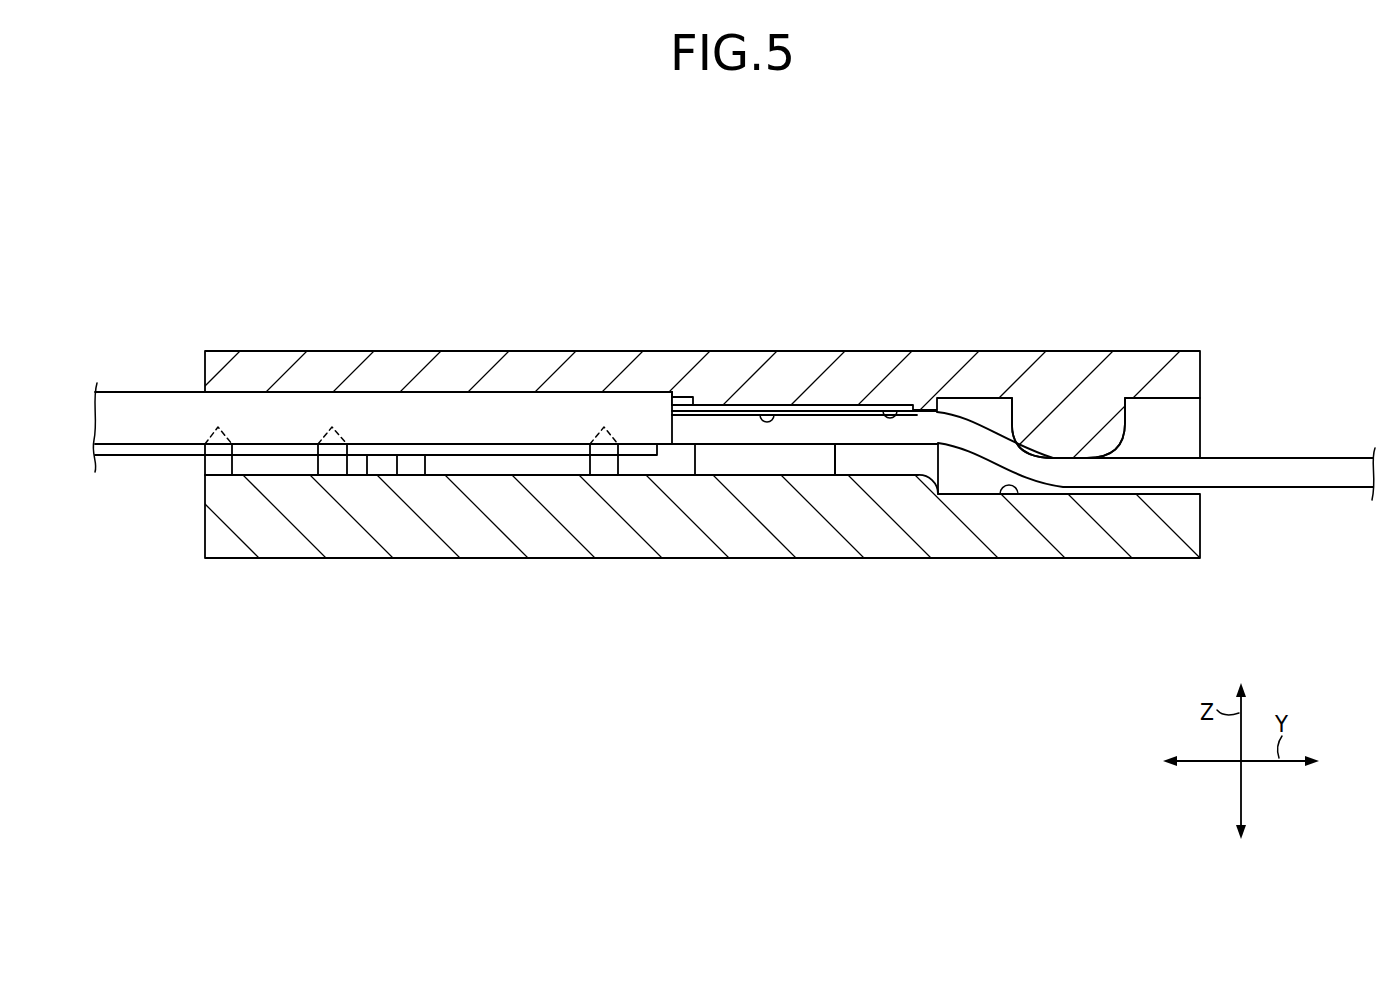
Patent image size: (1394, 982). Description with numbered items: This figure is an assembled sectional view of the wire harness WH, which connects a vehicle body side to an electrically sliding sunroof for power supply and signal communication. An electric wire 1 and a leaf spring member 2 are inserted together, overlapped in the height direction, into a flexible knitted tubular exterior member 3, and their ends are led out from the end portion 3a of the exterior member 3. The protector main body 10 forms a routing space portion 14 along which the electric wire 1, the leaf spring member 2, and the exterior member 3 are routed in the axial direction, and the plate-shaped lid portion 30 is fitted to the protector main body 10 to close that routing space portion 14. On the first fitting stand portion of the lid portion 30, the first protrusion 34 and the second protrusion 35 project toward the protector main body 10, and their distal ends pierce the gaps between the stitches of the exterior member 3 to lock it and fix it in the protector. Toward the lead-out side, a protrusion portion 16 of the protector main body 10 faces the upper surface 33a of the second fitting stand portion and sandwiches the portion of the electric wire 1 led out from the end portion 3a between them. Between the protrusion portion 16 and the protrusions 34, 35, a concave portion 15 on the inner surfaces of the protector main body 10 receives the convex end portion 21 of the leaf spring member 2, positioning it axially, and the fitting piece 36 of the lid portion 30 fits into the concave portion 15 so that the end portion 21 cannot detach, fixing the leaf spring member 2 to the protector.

The wire harness WH is at (1076, 216).
The electric wire 1 is at (1333, 467).
The leaf spring member 2 is at (769, 410).
The exterior member 3 is at (160, 405).
The end portion of the exterior member 3a is at (588, 422).
The protector main body 10 is at (452, 362).
The routing space portion 14 is at (737, 464).
The concave portion 15 is at (873, 460).
The protrusion portion 16 is at (1108, 432).
The end portion of the leaf spring member 21 is at (890, 405).
The lid portion 30 is at (488, 548).
The upper surface of the second fitting stand portion 33a is at (1003, 494).
The first protrusion 34 is at (326, 462).
The second protrusion 35 is at (410, 462).
The fitting piece 36 is at (886, 547).